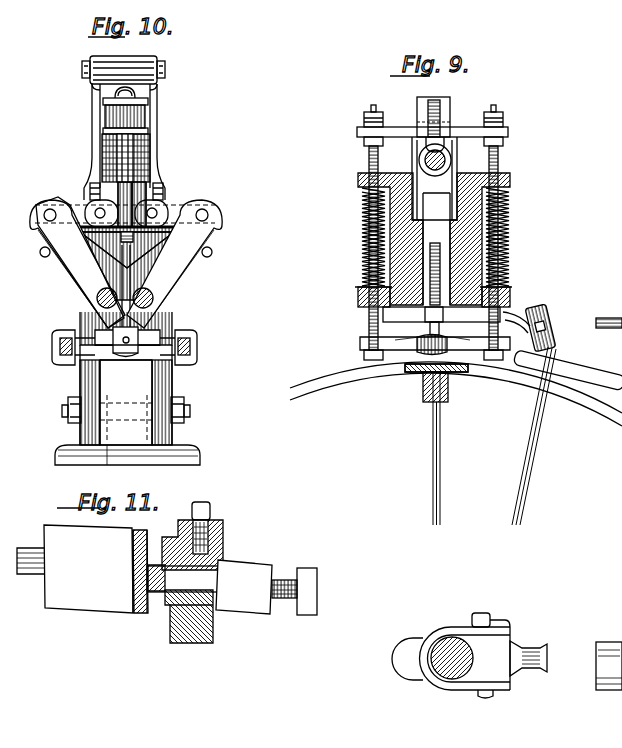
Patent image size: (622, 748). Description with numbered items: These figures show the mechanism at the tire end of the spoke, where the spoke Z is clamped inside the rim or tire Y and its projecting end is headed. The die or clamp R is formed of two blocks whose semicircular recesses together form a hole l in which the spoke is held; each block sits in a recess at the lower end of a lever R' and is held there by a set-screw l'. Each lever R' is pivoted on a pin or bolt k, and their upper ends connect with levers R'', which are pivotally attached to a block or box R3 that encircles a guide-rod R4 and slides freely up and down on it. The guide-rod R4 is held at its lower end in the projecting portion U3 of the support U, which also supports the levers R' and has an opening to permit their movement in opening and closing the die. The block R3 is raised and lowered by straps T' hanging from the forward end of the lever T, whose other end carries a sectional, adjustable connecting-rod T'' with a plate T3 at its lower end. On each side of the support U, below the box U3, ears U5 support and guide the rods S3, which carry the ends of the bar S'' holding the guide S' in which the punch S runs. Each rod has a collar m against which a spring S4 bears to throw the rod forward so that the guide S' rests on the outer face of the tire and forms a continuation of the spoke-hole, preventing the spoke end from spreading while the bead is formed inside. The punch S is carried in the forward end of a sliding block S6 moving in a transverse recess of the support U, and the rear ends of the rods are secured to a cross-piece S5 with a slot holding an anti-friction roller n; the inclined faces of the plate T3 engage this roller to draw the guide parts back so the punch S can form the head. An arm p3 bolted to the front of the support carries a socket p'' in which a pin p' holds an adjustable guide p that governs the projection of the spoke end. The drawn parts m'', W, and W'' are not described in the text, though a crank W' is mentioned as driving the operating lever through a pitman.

In FIG. 10, the lever T is at (123, 61).
In FIG. 10, the straps T' is at (122, 142).
In FIG. 10, the projecting portion of support U3 is at (122, 118).
In FIG. 10, the guide-rod R4 is at (123, 157).
In FIG. 10, the block or box R3 is at (128, 189).
In FIG. 10, the levers R'' is at (126, 252).
In FIG. 10, the levers R' is at (126, 283).
In FIG. 10, the pin or bolt k is at (97, 298).
In FIG. 10, the die or clamp R is at (124, 328).
In FIG. 9, the die or clamp R is at (436, 383).
In FIG. 11, the die or clamp R is at (88, 569).
In FIG. 10, the hole l is at (128, 335).
In FIG. 10, the set-screw l' is at (131, 347).
In FIG. 10, the ears U5 is at (119, 347).
In FIG. 9, the ears U5 is at (358, 180).
In FIG. 10, the bolt m'' is at (107, 410).
In FIG. 9, the anti-friction roller n is at (441, 111).
In FIG. 9, the cross-piece S5 is at (383, 124).
In FIG. 9, the plate T3 is at (444, 138).
In FIG. 9, the connecting-rod T'' is at (448, 160).
In FIG. 9, the spring S4 is at (428, 237).
In FIG. 9, the sliding block S6 is at (435, 249).
In FIG. 9, the collar m is at (431, 287).
In FIG. 9, the support U is at (358, 302).
In FIG. 9, the rods S3 is at (383, 315).
In FIG. 9, the support or bar S'' is at (445, 331).
In FIG. 11, the support or bar S'' is at (189, 626).
In FIG. 9, the rim or tire Y is at (456, 394).
In FIG. 11, the rim or tire Y is at (146, 537).
In FIG. 9, the spoke Z is at (494, 436).
In FIG. 11, the spoke Z is at (75, 554).
In FIG. 9, the pin p' is at (548, 328).
In FIG. 9, the socket p'' is at (538, 330).
In FIG. 9, the arm p3 is at (520, 324).
In FIG. 9, the guide p is at (567, 370).
In FIG. 11, the guide S' is at (175, 575).
In FIG. 11, the punch S is at (266, 587).
In FIG. 11, the eye piece W is at (448, 655).
In FIG. 11, the crank W' is at (447, 679).
In FIG. 11, the shank W'' is at (528, 668).